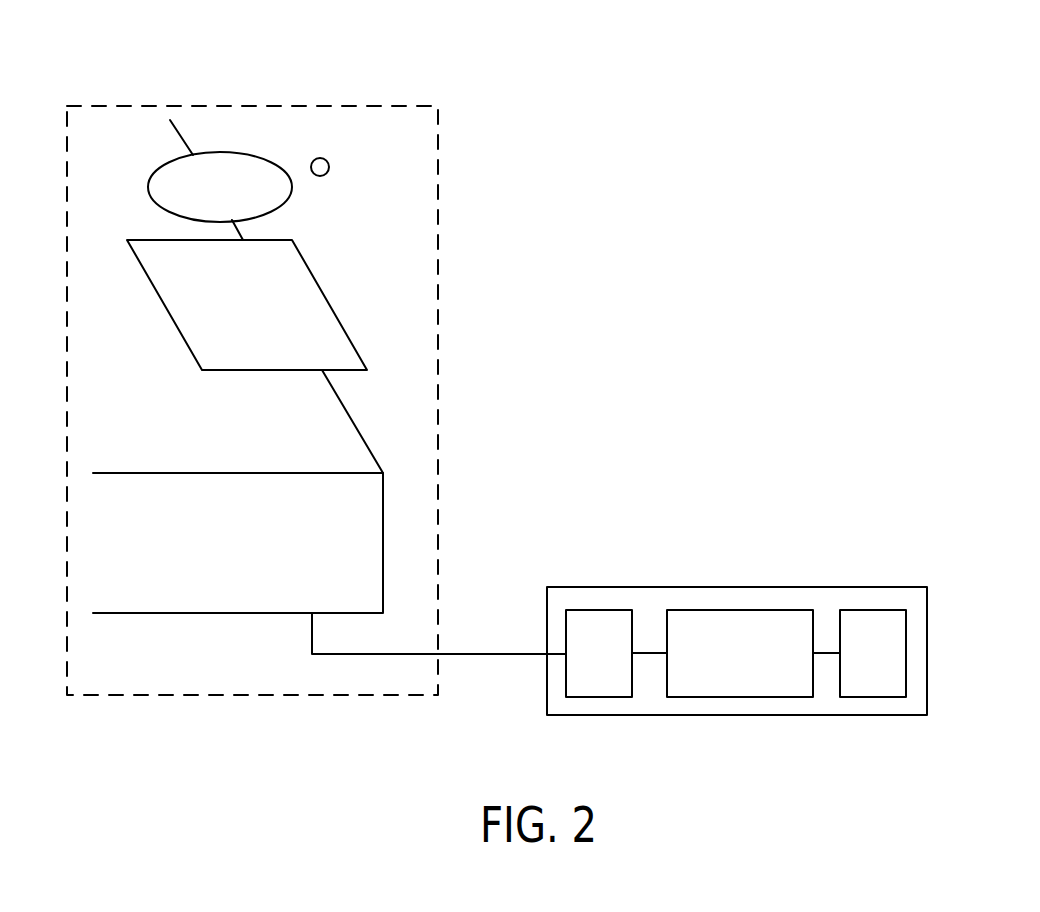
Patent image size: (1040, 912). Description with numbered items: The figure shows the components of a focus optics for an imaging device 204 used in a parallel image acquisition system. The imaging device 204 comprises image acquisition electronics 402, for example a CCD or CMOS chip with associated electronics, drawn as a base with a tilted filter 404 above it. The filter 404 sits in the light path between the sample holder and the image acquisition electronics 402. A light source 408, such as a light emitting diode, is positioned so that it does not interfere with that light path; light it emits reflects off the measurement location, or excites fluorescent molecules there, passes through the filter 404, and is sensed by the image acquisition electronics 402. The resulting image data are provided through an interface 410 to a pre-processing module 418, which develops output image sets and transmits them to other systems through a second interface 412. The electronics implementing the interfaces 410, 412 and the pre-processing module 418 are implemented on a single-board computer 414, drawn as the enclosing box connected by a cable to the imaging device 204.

The imaging device 204 is at (438, 178).
The image acquisition electronics 402 is at (362, 433).
The filter 404 is at (320, 285).
The light source 408 is at (325, 160).
The interface 410 is at (582, 610).
The interface 412 is at (892, 610).
The single-board computer 414 is at (927, 622).
The pre-processing module 418 is at (716, 610).